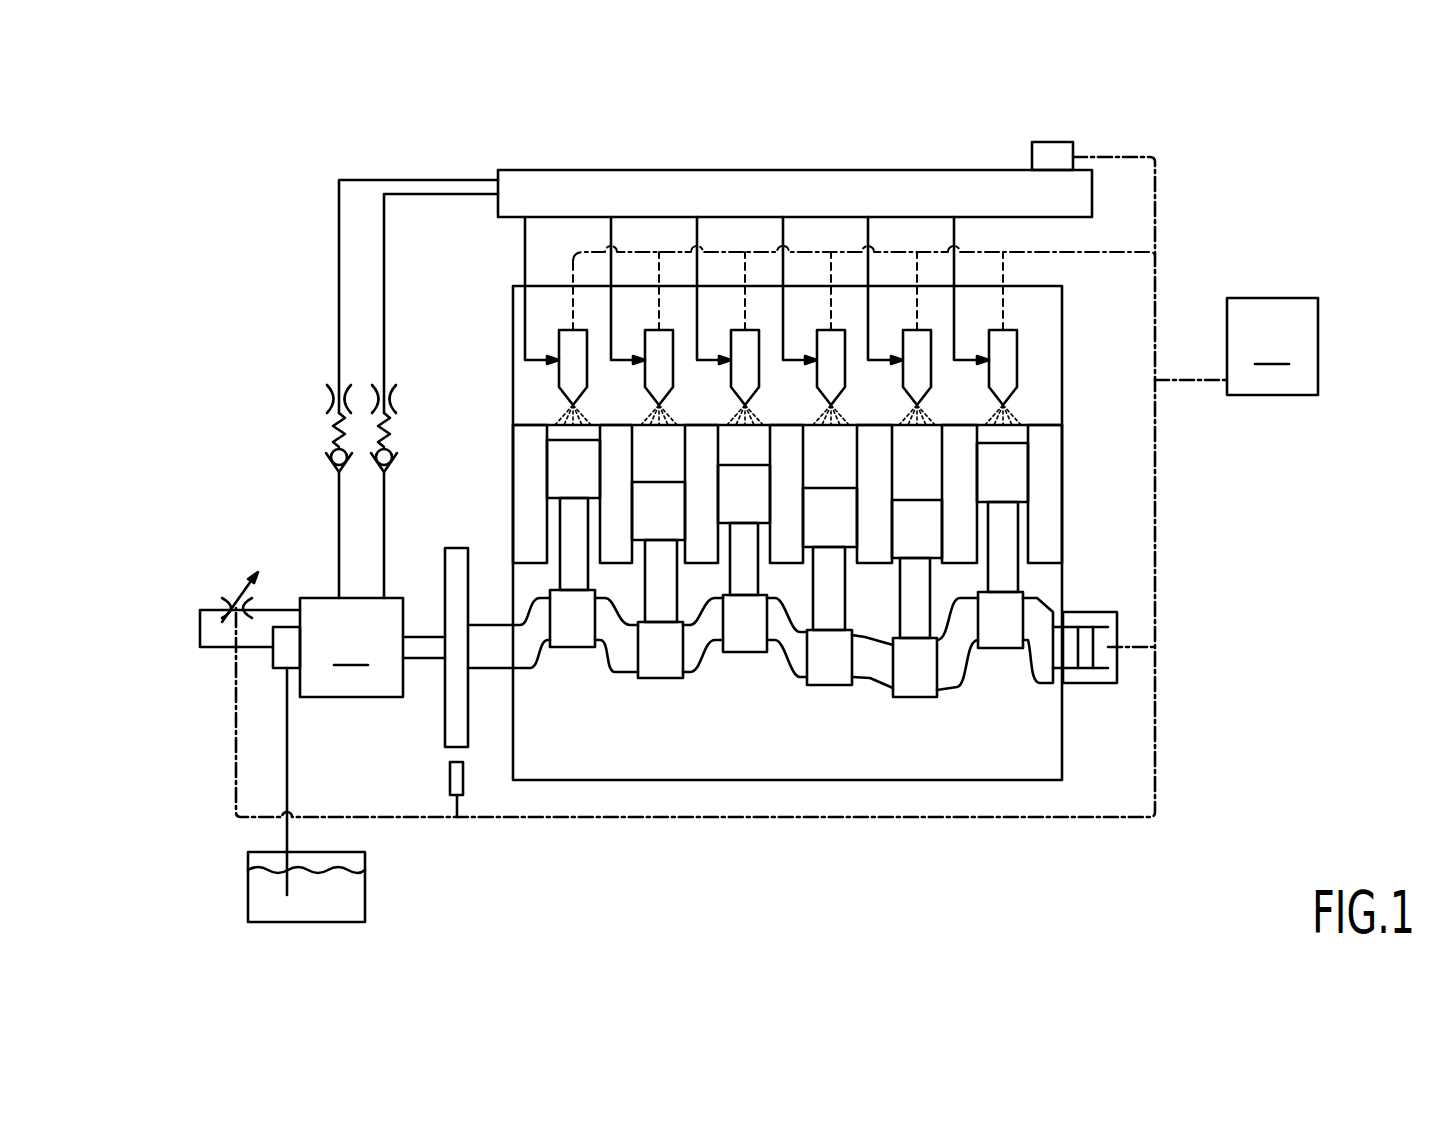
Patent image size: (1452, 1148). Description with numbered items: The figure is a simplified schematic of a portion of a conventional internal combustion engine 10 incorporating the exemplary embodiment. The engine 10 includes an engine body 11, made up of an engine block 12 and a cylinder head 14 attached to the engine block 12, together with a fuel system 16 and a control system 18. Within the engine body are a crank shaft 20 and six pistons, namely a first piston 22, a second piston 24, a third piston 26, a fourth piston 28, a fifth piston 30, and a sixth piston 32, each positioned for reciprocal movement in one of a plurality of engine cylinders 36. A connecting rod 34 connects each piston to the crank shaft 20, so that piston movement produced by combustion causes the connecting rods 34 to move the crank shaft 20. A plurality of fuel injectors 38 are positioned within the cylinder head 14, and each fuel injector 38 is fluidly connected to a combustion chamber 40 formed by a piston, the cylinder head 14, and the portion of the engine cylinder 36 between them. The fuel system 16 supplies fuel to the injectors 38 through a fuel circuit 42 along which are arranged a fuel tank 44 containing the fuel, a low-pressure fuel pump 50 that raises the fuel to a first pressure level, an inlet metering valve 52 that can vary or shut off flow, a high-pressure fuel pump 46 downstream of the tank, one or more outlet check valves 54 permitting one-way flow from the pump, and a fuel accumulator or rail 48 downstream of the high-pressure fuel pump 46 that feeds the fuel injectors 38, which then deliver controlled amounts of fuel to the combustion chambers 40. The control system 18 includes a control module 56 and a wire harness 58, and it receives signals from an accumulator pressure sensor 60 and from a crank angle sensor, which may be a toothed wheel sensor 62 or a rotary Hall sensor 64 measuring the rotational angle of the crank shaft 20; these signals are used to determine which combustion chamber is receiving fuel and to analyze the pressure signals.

The internal combustion engine 10 is at (252, 172).
The engine body 11 is at (1184, 797).
The engine block 12 is at (1062, 547).
The cylinder head 14 is at (1062, 370).
The fuel system 16 is at (235, 508).
The control system 18 is at (1319, 272).
The crank shaft 20 is at (855, 676).
The #1 piston 22 is at (573, 482).
The #2 piston 24 is at (652, 518).
The #3 piston 26 is at (743, 507).
The #4 piston 28 is at (823, 527).
The #5 piston 30 is at (915, 532).
The #6 piston 32 is at (1005, 477).
The connecting rod 34 is at (1005, 523).
The engine cylinder 36 is at (575, 480).
The fuel injector 38 is at (565, 340).
The combustion chamber 40 is at (650, 452).
The fuel circuit 42 is at (327, 276).
The fuel tank 44 is at (248, 852).
The high-pressure fuel pump 46 is at (351, 647).
The fuel accumulator or rail 48 is at (560, 168).
The low-pressure fuel pump 50 is at (272, 665).
The inlet metering valve 52 is at (226, 591).
The outlet check valve 54 is at (333, 455).
The control module 56 is at (1272, 346).
The wire harness 58 is at (1198, 380).
The accumulator pressure sensor 60 is at (1032, 143).
The toothed wheel sensor 62 is at (450, 777).
The rotary Hall sensor 64 is at (1117, 668).